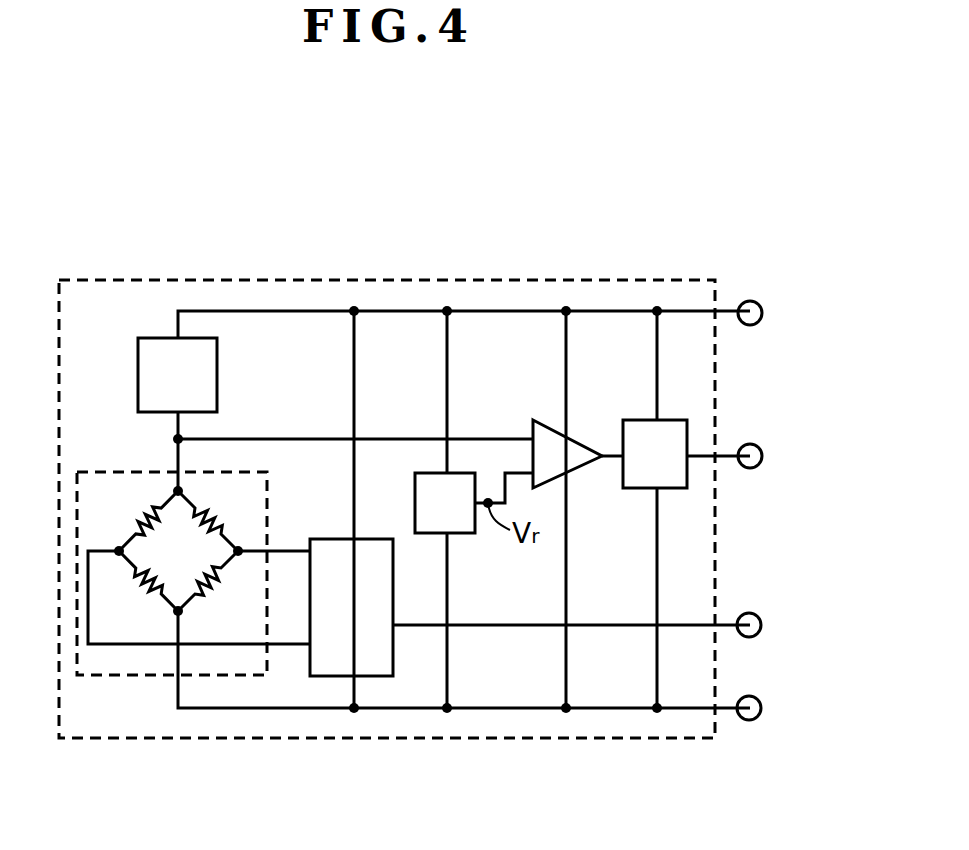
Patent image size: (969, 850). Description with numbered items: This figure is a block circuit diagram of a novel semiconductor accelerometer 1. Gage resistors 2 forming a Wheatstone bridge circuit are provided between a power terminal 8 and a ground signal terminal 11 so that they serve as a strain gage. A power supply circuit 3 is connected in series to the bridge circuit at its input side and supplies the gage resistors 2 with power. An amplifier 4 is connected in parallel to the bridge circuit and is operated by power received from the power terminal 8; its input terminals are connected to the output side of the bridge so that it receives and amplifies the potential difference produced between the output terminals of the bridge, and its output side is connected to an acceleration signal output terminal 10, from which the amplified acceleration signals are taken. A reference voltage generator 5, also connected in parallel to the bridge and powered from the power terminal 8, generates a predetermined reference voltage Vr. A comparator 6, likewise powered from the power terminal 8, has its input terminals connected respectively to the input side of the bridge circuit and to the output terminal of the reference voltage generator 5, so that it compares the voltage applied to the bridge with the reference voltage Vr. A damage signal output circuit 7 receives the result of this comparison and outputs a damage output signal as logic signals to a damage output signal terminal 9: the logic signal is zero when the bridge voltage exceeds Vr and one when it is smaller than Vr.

The semiconductor accelerometer 1 is at (372, 738).
The gage resistors 2 is at (128, 675).
The power supply circuit 3 is at (217, 378).
The amplifier 4 is at (323, 539).
The reference voltage generator 5 is at (460, 535).
The comparator 6 is at (533, 423).
The damage signal output circuit 7 is at (640, 490).
The power terminal 8 is at (758, 303).
The damage output signal terminal 9 is at (758, 446).
The acceleration signal output terminal 10 is at (757, 615).
The ground signal terminal 11 is at (757, 698).